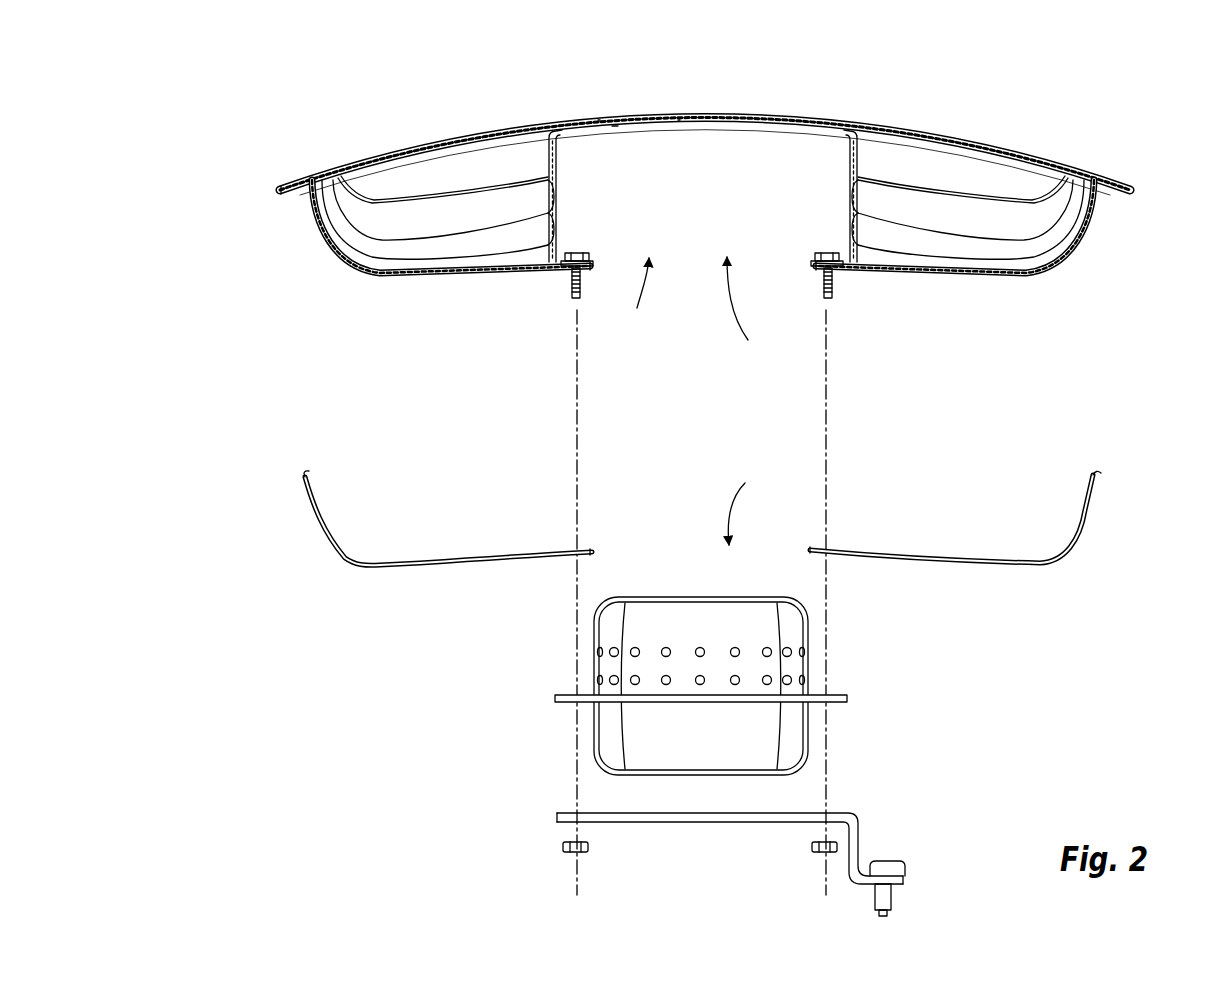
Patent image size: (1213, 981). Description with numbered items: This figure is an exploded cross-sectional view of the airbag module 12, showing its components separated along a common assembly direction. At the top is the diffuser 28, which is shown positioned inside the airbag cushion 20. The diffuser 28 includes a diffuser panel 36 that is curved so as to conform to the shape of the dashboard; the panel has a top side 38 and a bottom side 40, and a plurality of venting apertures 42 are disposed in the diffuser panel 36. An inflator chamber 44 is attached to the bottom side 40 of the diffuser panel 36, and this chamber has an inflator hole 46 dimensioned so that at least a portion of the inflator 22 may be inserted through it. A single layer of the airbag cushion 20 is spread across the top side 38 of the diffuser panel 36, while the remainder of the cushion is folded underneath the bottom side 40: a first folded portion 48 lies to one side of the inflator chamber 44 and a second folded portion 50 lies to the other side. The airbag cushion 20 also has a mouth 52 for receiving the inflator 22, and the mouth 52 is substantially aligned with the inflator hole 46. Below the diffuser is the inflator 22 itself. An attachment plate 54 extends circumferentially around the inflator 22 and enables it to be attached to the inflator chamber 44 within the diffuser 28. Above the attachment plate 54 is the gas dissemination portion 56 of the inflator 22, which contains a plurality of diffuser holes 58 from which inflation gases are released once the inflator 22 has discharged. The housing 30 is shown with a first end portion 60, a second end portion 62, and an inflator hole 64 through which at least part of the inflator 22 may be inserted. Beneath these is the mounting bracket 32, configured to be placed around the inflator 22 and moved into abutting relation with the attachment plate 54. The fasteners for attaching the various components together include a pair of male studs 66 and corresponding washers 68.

The airbag module 12 is at (202, 135).
The airbag cushion 20 is at (347, 230).
The inflator 22 is at (641, 592).
The diffuser 28 is at (287, 178).
The housing 30 is at (1062, 562).
The mounting bracket 32 is at (720, 822).
The diffuser panel 36 is at (487, 128).
The top side 38 is at (432, 144).
The bottom side 40 is at (615, 125).
The venting apertures 42 is at (678, 116).
The inflator chamber 44 is at (845, 160).
The inflator hole 46 is at (751, 309).
The first folded portion 48 is at (433, 262).
The second folded portion 50 is at (1043, 258).
The mouth 52 is at (631, 297).
The attachment plate 54 is at (848, 692).
The gas dissemination portion 56 is at (810, 620).
The diffuser holes 58 is at (605, 680).
The first end portion 60 is at (315, 488).
The second end portion 62 is at (1093, 483).
The inflator hole 64 is at (750, 505).
The male studs 66 is at (567, 288).
The washers 68 is at (575, 853).